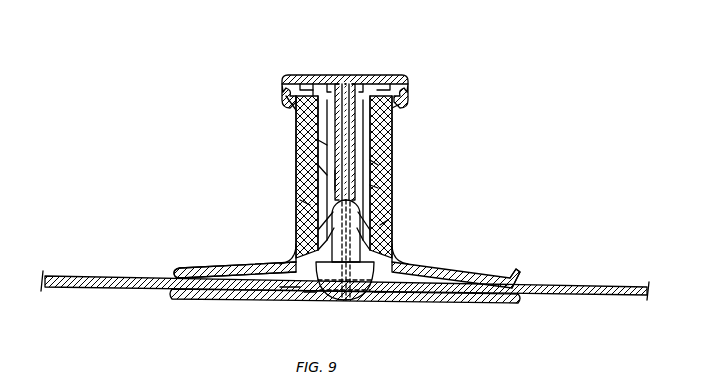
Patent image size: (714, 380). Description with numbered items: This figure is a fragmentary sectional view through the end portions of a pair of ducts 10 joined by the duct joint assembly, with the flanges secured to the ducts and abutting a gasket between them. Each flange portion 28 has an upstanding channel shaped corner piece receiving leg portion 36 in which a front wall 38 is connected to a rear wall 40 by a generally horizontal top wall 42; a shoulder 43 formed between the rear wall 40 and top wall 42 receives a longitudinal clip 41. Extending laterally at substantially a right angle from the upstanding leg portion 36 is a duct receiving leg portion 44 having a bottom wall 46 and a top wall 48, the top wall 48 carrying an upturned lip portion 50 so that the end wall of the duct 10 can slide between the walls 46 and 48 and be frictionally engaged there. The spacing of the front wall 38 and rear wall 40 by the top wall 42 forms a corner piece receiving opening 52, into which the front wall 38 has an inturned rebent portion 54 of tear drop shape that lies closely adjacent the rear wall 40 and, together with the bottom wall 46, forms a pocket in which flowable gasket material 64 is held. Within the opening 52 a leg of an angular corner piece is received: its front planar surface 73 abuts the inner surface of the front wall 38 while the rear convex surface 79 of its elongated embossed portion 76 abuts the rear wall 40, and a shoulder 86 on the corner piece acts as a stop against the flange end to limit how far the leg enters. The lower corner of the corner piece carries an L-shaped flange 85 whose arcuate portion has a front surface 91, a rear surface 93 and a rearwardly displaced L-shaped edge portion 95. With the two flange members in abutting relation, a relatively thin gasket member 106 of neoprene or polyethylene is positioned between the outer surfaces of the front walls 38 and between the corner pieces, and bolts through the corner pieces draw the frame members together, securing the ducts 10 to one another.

The duct 10 is at (97, 257).
The flange portion 28 is at (293, 114).
The upstanding channel shaped corner piece receiving leg portion 36 is at (395, 148).
The front wall 38 is at (338, 178).
The rear wall 40 is at (328, 170).
The longitudinal clip 41 is at (312, 75).
The top wall 42 is at (375, 74).
The shoulder 43 is at (395, 77).
The duct receiving leg portion 44 is at (217, 252).
The bottom wall 46 is at (217, 296).
The top wall 48 is at (268, 266).
The upturned lip portion 50 is at (172, 270).
The corner piece receiving opening 52 is at (327, 143).
The inturned rebent portion 54 is at (400, 265).
The gasket material 64 is at (276, 289).
The front planar surface 73 is at (349, 80).
The embossed portion 76 is at (381, 164).
The rear convex surface 79 is at (390, 133).
The L-shaped flange 85 is at (307, 203).
The shoulder 86 is at (318, 77).
The front surface 91 is at (348, 300).
The rear surface 93 is at (310, 248).
The L-shaped edge portion 95 is at (308, 295).
The gasket member 106 is at (388, 189).